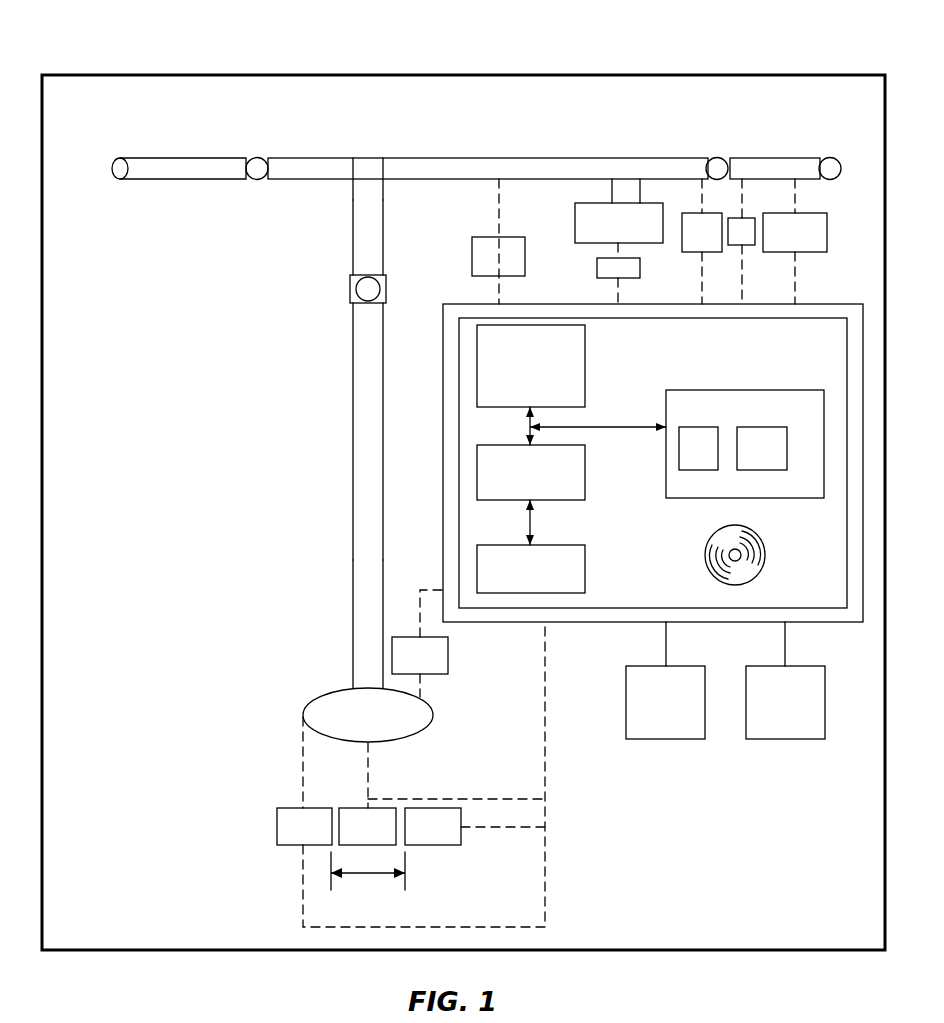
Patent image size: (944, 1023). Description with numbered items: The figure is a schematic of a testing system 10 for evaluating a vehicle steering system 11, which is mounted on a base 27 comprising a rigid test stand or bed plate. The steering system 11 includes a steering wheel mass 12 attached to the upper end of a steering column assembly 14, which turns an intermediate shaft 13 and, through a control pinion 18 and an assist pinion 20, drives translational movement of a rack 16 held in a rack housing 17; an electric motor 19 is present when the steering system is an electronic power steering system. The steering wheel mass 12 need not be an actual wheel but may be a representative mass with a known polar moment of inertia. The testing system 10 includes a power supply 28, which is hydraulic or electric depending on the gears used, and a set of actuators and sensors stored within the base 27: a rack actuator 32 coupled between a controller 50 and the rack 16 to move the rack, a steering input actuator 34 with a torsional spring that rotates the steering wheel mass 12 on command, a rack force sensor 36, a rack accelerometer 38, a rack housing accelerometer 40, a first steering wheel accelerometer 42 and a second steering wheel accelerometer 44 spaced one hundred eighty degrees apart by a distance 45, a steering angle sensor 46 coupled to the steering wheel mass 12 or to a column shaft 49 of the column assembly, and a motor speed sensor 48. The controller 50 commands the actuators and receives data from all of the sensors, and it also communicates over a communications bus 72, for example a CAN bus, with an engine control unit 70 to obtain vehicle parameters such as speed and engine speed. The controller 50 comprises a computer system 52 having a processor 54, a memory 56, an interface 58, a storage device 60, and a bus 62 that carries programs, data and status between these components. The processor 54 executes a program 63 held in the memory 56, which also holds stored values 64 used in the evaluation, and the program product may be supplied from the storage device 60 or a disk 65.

The testing system 10 is at (540, 102).
The vehicle steering system 11 is at (118, 142).
The steering wheel mass 12 is at (345, 690).
The intermediate shaft 13 is at (353, 245).
The steering column assembly 14 is at (353, 408).
The rack 16 is at (551, 162).
The rack housing 17 is at (497, 184).
The control pinion 18 is at (368, 162).
The electric motor 19 is at (575, 215).
The assist pinion 20 is at (626, 162).
The base 27 is at (154, 76).
The power supply 28 is at (690, 740).
The rack actuator 32 is at (791, 252).
The steering input actuator 34 is at (348, 808).
The rack force sensor 36 is at (745, 218).
The rack accelerometer 38 is at (695, 252).
The rack housing accelerometer 40 is at (472, 247).
The first steering wheel accelerometer 42 is at (277, 824).
The second steering wheel accelerometer 44 is at (452, 846).
The distance 45 is at (380, 876).
The steering angle sensor 46 is at (450, 655).
The motor speed sensor 48 is at (597, 268).
The column shaft 49 is at (355, 615).
The controller 50 is at (820, 304).
The computer system 52 is at (480, 318).
The processor 54 is at (585, 352).
The memory 56 is at (680, 390).
The interface 58 is at (585, 472).
The storage device 60 is at (585, 558).
The bus 62 is at (530, 430).
The program 63 is at (693, 427).
The stored values 64 is at (770, 427).
The disk 65 is at (762, 540).
The engine control unit 70 is at (812, 740).
The communications bus 72 is at (786, 632).